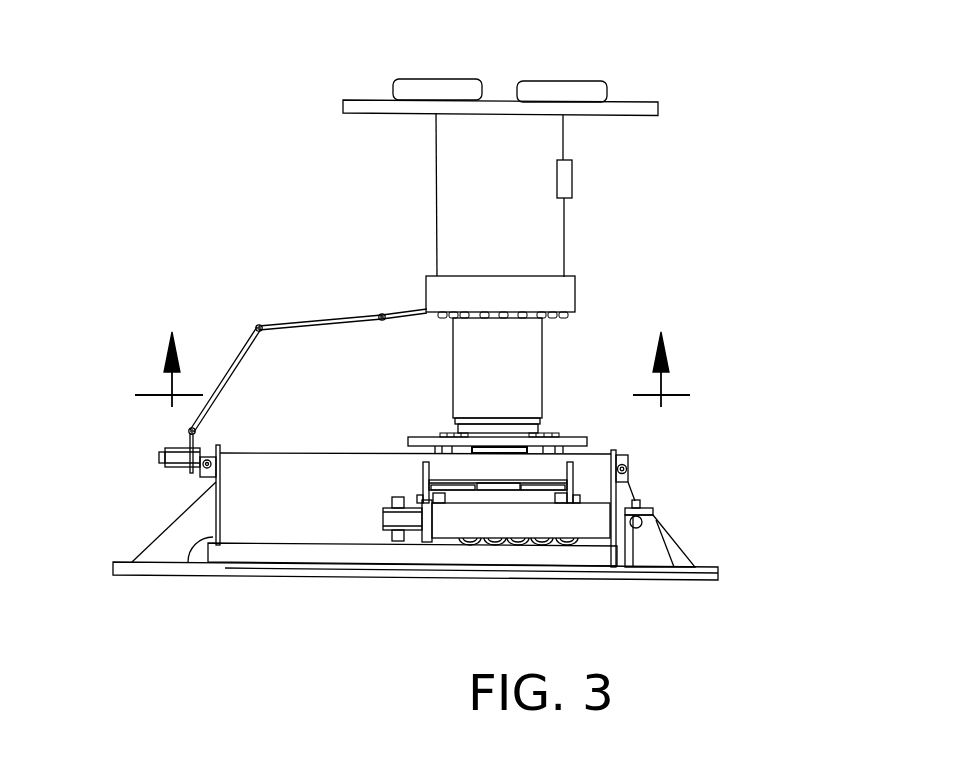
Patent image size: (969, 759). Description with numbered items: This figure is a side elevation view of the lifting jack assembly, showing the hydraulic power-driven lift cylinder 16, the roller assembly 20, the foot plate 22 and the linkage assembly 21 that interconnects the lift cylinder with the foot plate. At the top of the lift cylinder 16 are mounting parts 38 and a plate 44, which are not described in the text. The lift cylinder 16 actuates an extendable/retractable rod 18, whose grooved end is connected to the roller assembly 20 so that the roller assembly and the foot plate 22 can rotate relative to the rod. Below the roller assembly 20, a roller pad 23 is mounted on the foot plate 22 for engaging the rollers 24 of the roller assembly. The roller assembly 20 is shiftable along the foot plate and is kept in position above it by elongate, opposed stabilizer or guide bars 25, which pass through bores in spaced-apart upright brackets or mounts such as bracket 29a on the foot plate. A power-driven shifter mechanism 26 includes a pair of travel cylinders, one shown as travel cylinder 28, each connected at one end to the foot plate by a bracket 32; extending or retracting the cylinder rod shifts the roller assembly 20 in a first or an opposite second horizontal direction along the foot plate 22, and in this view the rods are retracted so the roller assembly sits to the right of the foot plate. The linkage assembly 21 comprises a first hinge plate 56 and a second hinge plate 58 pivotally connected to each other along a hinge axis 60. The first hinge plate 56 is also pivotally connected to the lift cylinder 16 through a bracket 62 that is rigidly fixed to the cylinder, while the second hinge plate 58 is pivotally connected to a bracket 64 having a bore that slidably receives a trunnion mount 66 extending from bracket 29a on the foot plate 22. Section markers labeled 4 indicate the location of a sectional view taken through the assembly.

The mounting pads 38 is at (437, 88).
The mounting plate 44 is at (342, 107).
The lift cylinder 16 is at (447, 160).
The rod 18 is at (470, 356).
The linkage assembly 21 is at (146, 252).
The second hinge plate 58 is at (225, 360).
The first hinge plate 56 is at (310, 317).
The hinge axis 60 is at (255, 325).
The bracket 62 is at (405, 308).
The bracket 64 is at (185, 446).
The trunnion mount 66 is at (165, 456).
The section line FIG. 4 is at (412, 381).
The stabilizer or guide bars 25 is at (305, 452).
The roller assembly 20 is at (282, 510).
The upright bracket or mount 29a is at (212, 526).
The foot plate 22 is at (157, 565).
The roller pad 23 is at (272, 557).
The travel cylinder 28 is at (455, 520).
The rollers 24 is at (517, 542).
The shifter mechanism 26 is at (563, 531).
The bracket 32 is at (648, 547).